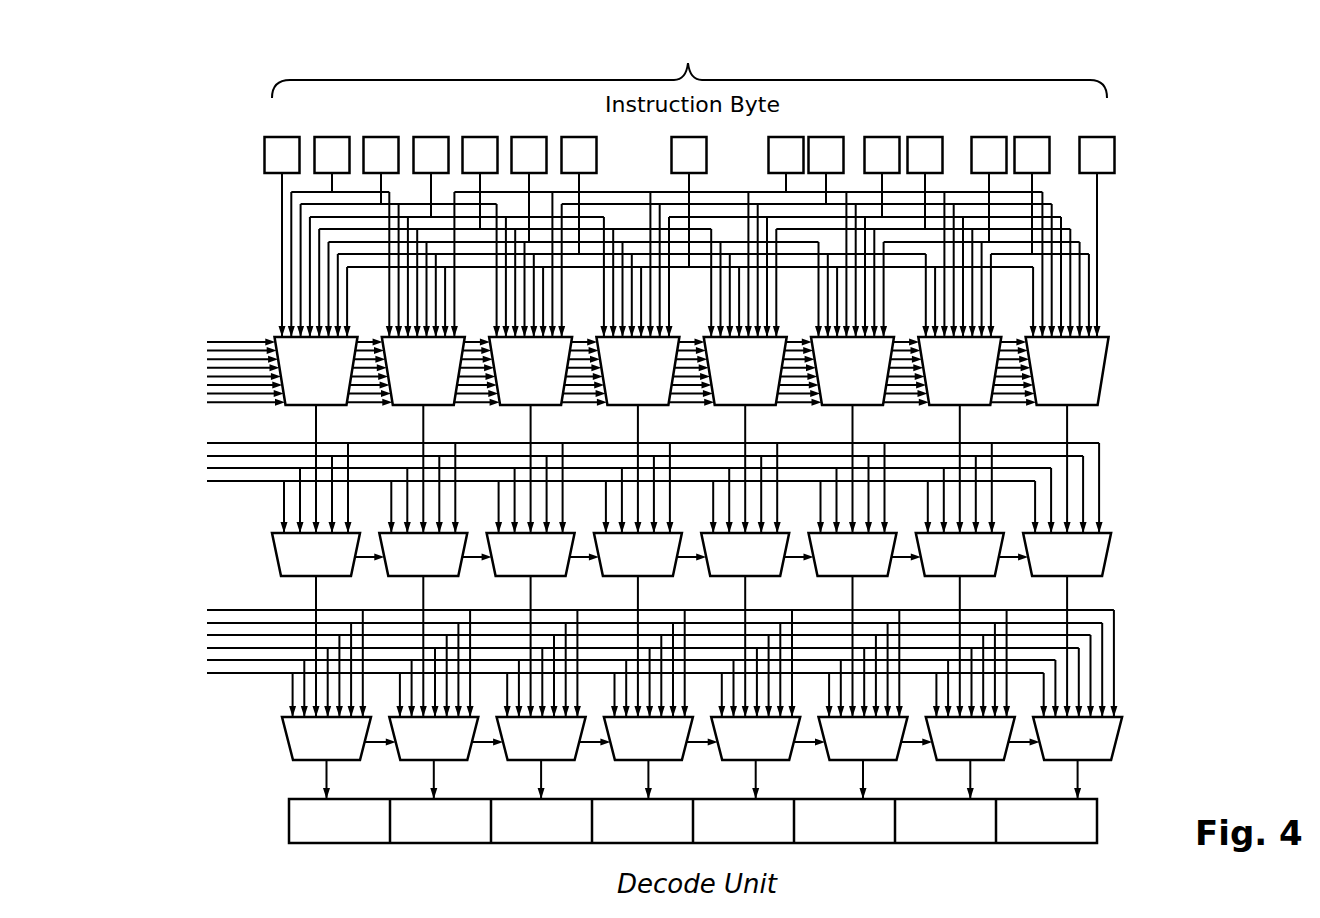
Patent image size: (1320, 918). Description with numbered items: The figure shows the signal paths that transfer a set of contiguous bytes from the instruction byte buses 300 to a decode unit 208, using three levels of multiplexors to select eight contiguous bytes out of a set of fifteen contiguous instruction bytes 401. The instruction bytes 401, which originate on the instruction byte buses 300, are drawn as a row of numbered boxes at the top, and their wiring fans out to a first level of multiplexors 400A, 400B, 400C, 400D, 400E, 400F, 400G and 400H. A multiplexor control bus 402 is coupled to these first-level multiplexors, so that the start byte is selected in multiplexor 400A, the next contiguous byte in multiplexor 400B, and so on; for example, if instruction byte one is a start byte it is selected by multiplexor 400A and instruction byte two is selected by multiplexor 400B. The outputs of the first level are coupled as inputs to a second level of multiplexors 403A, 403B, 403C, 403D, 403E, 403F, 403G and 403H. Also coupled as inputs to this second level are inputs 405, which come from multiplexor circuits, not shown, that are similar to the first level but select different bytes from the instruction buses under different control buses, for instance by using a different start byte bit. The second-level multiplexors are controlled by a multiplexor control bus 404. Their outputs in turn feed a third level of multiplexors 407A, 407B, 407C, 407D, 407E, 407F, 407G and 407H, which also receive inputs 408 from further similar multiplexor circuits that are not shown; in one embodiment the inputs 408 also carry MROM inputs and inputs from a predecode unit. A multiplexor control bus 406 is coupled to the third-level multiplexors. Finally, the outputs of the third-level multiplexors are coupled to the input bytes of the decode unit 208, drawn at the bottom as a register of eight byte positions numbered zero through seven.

The instruction byte buses 300 is at (689, 65).
The contiguous instruction bytes 401 is at (260, 157).
The multiplexor control bus 402 is at (206, 340).
The first-level multiplexor 400A is at (316, 371).
The first-level multiplexor 400B is at (423, 371).
The first-level multiplexor 400C is at (530, 371).
The first-level multiplexor 400D is at (637, 371).
The first-level multiplexor 400E is at (745, 371).
The first-level multiplexor 400F is at (852, 371).
The first-level multiplexor 400G is at (959, 371).
The first-level multiplexor 400H is at (1067, 371).
The inputs 405 is at (206, 441).
The second-level multiplexor 403A is at (316, 554).
The second-level multiplexor 403B is at (423, 554).
The second-level multiplexor 403C is at (531, 554).
The second-level multiplexor 403D is at (638, 554).
The second-level multiplexor 403E is at (745, 554).
The second-level multiplexor 403F is at (853, 554).
The second-level multiplexor 403G is at (960, 554).
The second-level multiplexor 403H is at (1067, 554).
The multiplexor control bus 404 is at (272, 557).
The inputs 408 is at (206, 608).
The third-level multiplexor 407A is at (326, 738).
The third-level multiplexor 407B is at (433, 738).
The third-level multiplexor 407C is at (541, 738).
The third-level multiplexor 407D is at (648, 738).
The third-level multiplexor 407E is at (755, 738).
The third-level multiplexor 407F is at (863, 738).
The third-level multiplexor 407G is at (970, 738).
The third-level multiplexor 407H is at (1077, 738).
The multiplexor control bus 406 is at (283, 742).
The decode unit 208 is at (428, 845).